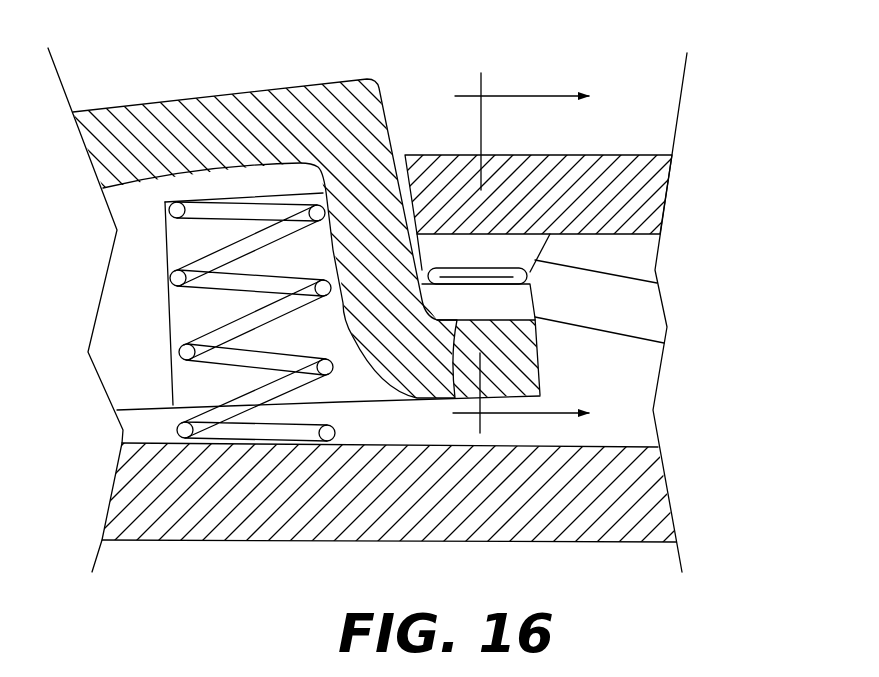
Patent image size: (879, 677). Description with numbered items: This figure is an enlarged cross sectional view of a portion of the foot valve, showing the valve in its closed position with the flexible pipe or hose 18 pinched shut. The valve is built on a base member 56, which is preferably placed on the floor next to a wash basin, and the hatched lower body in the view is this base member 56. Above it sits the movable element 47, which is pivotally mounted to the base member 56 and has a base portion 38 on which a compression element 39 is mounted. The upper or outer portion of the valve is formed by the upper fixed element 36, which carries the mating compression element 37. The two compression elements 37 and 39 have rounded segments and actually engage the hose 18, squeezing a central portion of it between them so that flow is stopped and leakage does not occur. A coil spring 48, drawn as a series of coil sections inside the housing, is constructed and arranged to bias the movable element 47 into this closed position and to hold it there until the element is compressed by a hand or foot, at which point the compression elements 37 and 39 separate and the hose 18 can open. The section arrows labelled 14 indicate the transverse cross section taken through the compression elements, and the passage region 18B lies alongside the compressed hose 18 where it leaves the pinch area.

The section line 14- 14 is at (545, 253).
The flexible pipe or hose 18 is at (498, 268).
The passage 18B is at (625, 307).
The upper fixed element 36 is at (443, 163).
The compression element 37 is at (463, 250).
The base portion 38 is at (523, 343).
The compression element 39 is at (470, 303).
The movable element 47 is at (297, 108).
The coil spring 48 is at (243, 403).
The base member 56 is at (648, 508).